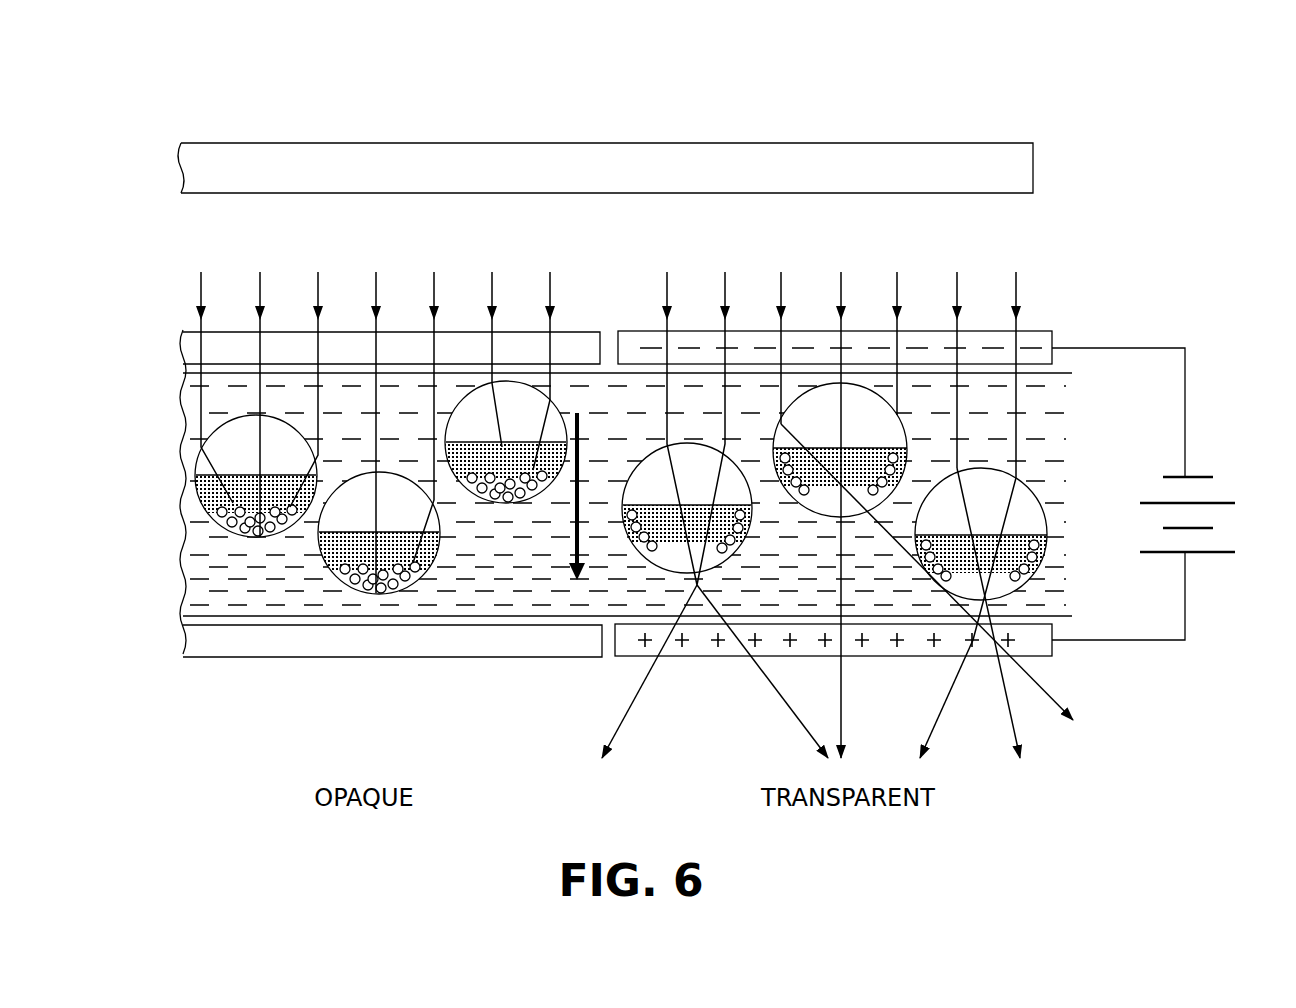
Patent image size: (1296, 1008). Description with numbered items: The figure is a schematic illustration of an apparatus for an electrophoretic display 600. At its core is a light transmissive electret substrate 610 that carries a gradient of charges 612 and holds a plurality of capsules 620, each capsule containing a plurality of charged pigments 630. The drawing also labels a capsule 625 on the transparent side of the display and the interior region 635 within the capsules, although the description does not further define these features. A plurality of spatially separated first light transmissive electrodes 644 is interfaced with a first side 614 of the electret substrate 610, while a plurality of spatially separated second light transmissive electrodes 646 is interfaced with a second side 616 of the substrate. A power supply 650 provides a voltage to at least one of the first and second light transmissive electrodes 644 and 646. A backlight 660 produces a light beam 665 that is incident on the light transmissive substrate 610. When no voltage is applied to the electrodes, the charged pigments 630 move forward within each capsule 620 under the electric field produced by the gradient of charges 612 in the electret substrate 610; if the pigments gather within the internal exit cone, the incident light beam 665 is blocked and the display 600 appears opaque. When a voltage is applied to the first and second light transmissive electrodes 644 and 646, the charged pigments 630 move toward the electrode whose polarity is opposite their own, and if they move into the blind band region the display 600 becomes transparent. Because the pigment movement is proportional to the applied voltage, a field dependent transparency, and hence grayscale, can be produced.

The apparatus for an electrophoretic display 600 is at (1142, 113).
The light transmissive electret substrate 610 is at (458, 590).
The gradient of charges 612 is at (540, 643).
The first side 614 is at (198, 615).
The second side 616 is at (192, 374).
The capsules 620 is at (315, 565).
The microcapsule (transparent region) 625 is at (990, 655).
The charged pigments 630 is at (362, 562).
The fluid within microcapsule 635 is at (690, 463).
The first light transmissive electrodes 644 is at (623, 642).
The second light transmissive electrodes 646 is at (623, 343).
The power supply 650 is at (1172, 494).
The backlight 660 is at (578, 180).
The light beam 665 is at (1042, 278).